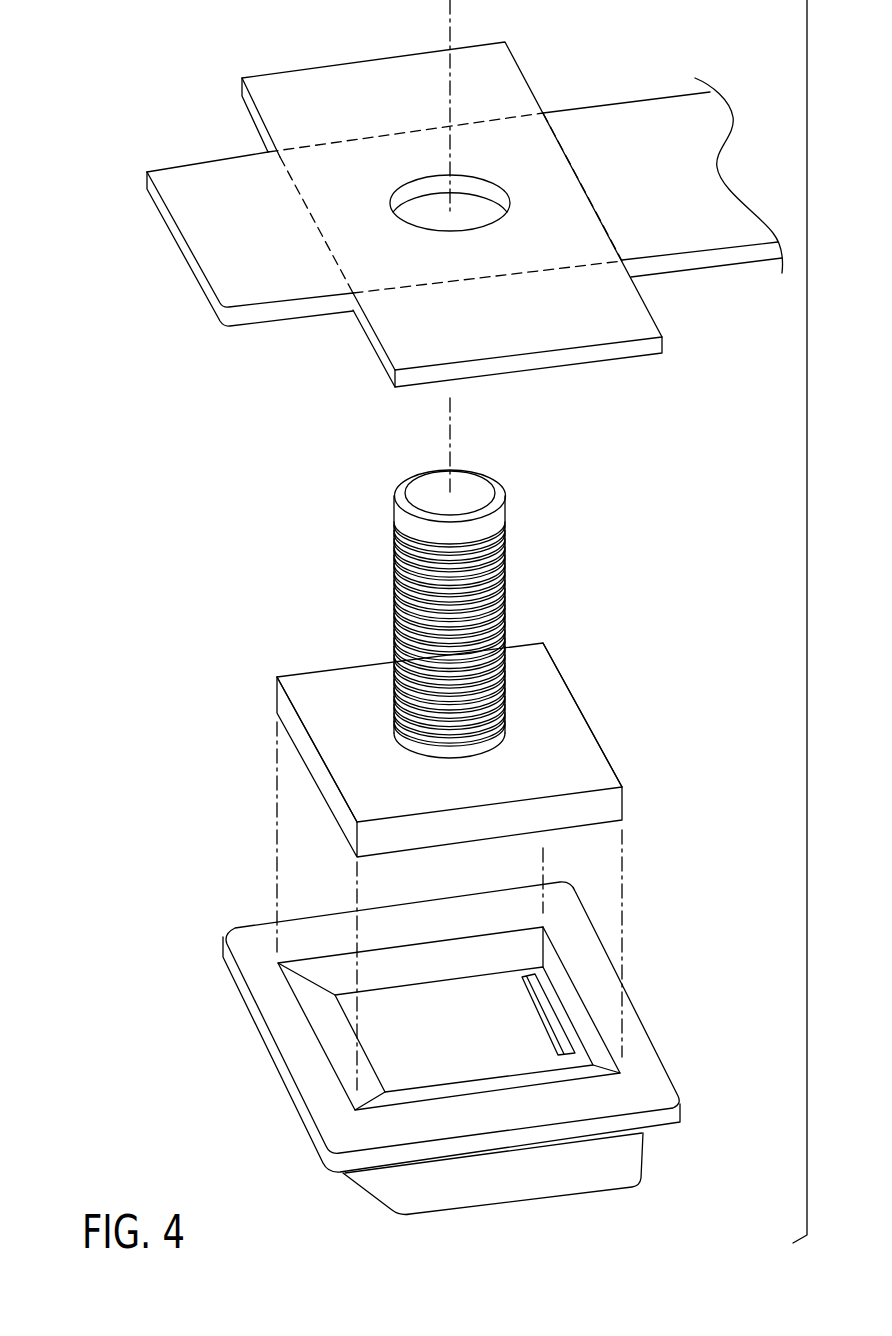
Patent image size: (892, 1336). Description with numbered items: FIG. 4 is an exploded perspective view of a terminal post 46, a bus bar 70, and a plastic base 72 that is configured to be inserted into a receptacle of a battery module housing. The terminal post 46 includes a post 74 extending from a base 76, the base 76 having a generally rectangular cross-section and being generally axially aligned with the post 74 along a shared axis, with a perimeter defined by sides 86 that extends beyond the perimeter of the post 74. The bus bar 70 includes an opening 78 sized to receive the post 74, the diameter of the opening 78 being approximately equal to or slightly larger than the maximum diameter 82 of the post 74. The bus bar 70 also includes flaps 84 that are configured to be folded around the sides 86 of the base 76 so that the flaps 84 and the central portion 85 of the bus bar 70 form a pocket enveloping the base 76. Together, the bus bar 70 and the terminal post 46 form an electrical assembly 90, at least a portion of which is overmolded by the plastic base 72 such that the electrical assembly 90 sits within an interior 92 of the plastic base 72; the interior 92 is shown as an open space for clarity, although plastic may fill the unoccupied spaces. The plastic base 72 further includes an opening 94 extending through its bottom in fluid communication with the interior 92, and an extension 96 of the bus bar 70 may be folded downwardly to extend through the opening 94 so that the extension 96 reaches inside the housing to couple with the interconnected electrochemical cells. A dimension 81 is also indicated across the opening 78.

The terminal post 46 is at (355, 517).
The bus bar 70 is at (167, 283).
The plastic base 72 is at (673, 1022).
The post 74 is at (410, 570).
The base 76 is at (562, 717).
The opening 78 is at (470, 207).
The hole diameter 81 is at (391, 240).
The maximum diameter 82 is at (394, 452).
The flaps 84 is at (305, 85).
The central portion 85 is at (473, 147).
The sides 86 is at (605, 808).
The electrical assembly 90 is at (96, 30).
The interior 92 is at (493, 1010).
The opening 94 is at (560, 1013).
The extension 96 is at (647, 123).